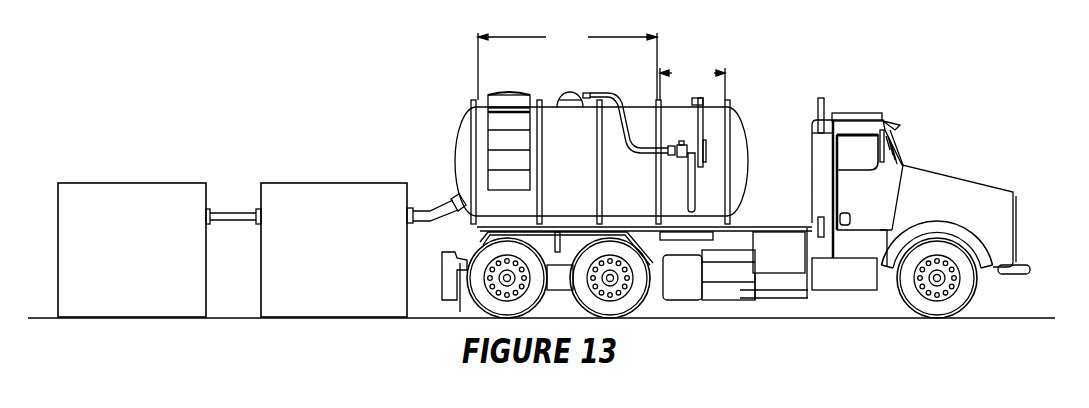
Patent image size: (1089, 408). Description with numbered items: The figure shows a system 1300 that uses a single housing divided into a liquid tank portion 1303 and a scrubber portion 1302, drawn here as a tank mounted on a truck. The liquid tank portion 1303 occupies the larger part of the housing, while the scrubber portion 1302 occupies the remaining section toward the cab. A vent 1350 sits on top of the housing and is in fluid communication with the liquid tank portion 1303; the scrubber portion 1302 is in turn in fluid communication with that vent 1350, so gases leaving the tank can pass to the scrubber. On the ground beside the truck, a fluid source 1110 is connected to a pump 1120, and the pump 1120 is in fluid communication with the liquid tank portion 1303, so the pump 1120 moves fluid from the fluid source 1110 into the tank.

The fluid source 1110 is at (131, 183).
The pump 1120 is at (333, 183).
The system 1300 is at (736, 172).
The scrubber portion 1302 is at (692, 81).
The liquid tank portion 1303 is at (567, 63).
The vent 1350 is at (568, 92).